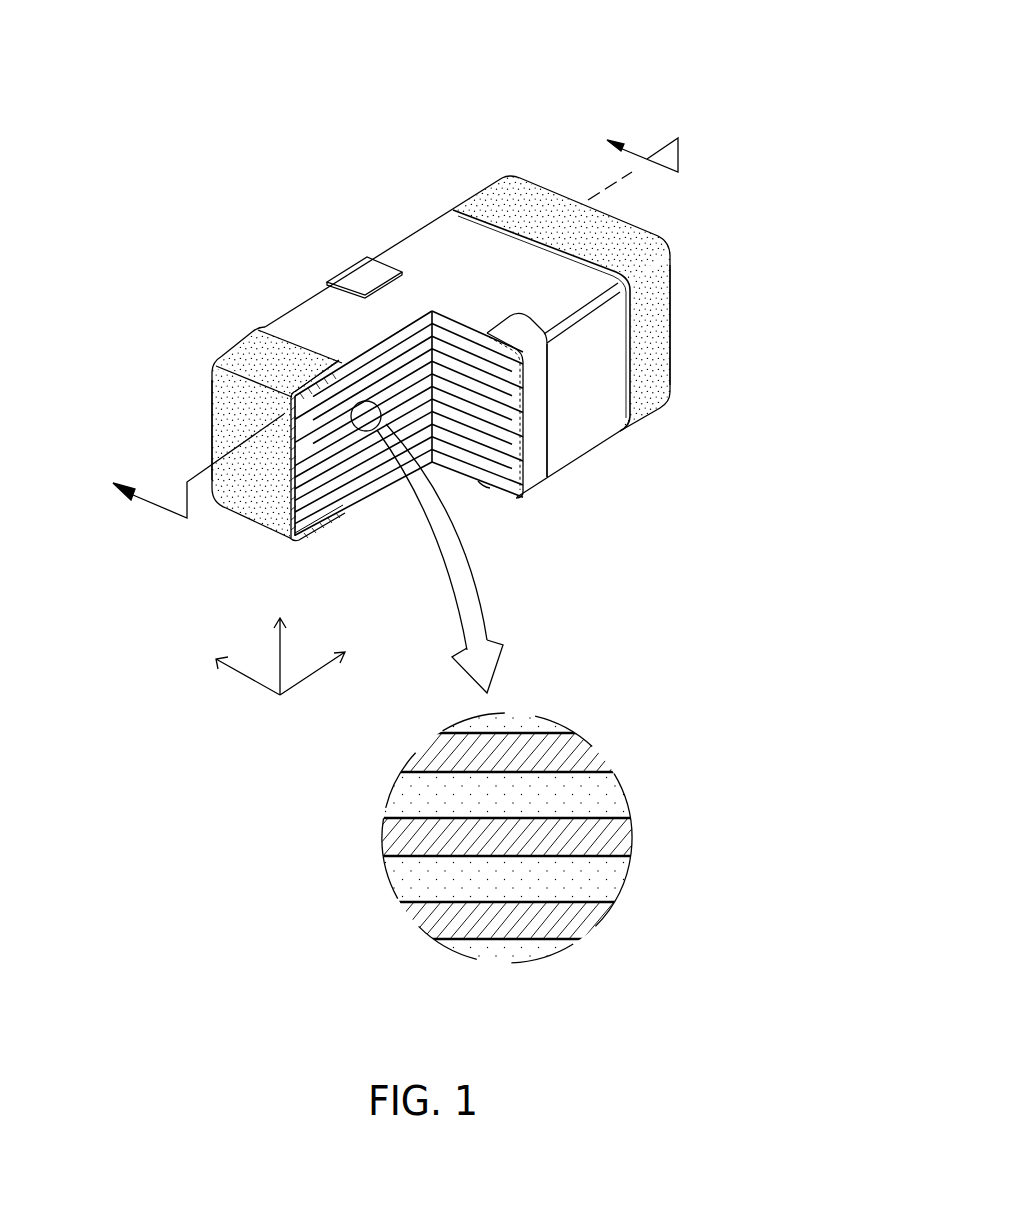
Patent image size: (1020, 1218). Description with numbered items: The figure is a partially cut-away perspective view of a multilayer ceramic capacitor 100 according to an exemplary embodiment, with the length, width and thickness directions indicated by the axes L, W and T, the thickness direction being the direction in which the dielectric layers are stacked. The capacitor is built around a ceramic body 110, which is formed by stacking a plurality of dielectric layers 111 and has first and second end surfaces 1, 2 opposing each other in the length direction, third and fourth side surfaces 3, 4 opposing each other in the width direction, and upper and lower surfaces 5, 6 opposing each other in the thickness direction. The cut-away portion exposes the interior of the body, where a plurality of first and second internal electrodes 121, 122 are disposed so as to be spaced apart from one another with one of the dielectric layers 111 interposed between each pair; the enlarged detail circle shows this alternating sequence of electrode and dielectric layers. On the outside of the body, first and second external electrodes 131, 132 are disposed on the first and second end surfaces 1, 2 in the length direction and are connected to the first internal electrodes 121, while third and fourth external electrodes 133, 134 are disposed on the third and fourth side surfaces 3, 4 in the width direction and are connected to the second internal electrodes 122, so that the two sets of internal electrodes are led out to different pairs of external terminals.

The multilayer ceramic capacitor 100 is at (465, 38).
The ceramic body 110 is at (418, 242).
The dielectric layers 111 is at (613, 875).
The first internal electrodes 121 is at (588, 754).
The second internal electrodes 122 is at (622, 834).
The first external electrode 131 is at (236, 503).
The second external electrode 132 is at (509, 200).
The third external electrode 133 is at (535, 486).
The fourth external electrode 134 is at (353, 272).
The first end surface 1 is at (256, 518).
The second end surface 2 is at (672, 313).
The third side surface 3 is at (604, 425).
The fourth side surface 4 is at (283, 292).
The upper surface 5 is at (315, 303).
The lower surface 6 is at (585, 451).